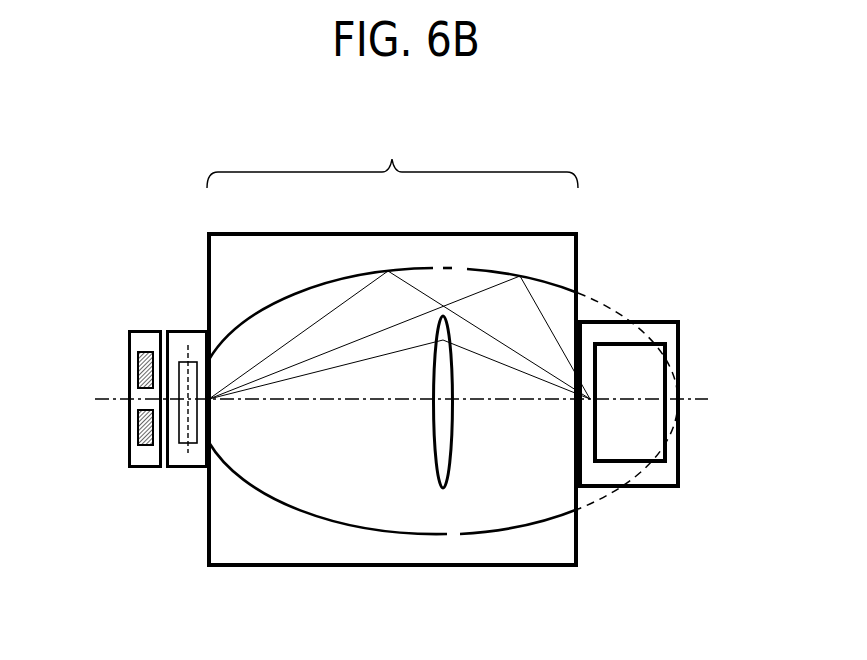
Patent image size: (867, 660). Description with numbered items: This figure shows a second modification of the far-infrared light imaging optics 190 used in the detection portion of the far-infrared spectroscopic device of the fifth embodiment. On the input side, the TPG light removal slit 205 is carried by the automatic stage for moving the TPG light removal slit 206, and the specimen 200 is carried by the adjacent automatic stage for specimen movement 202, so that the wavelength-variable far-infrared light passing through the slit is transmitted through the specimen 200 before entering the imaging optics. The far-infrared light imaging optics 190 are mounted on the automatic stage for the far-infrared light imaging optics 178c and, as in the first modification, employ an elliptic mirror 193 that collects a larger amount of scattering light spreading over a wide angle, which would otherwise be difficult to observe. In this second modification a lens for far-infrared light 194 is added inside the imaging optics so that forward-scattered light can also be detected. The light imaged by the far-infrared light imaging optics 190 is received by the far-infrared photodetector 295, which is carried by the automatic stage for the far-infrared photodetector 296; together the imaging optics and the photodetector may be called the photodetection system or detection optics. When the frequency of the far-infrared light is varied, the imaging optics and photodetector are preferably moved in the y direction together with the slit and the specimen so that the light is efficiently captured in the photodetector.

The far-infrared light imaging optics 190 is at (392, 153).
The automatic stage for the far-infrared light imaging optics 178c is at (455, 570).
The elliptic mirror 193 is at (315, 517).
The lens for far-infrared light 194 is at (450, 336).
The automatic stage for moving the TPG light removal slit 206 is at (140, 330).
The TPG light removal slit 205 is at (138, 440).
The automatic stage for specimen movement 202 is at (188, 330).
The specimen 200 is at (186, 445).
The far-infrared photodetector 295 is at (635, 338).
The automatic stage for the far-infrared photodetector 296 is at (660, 488).